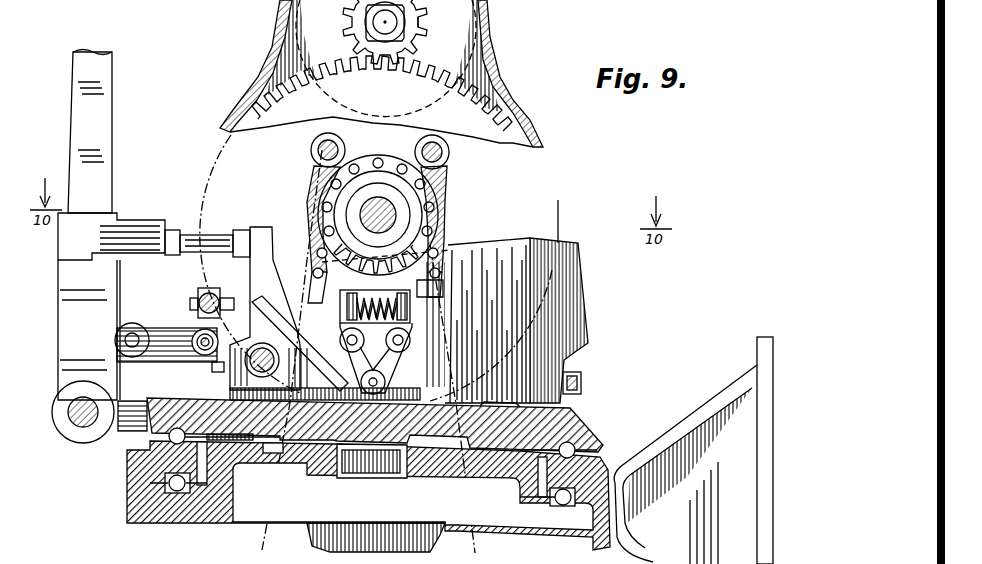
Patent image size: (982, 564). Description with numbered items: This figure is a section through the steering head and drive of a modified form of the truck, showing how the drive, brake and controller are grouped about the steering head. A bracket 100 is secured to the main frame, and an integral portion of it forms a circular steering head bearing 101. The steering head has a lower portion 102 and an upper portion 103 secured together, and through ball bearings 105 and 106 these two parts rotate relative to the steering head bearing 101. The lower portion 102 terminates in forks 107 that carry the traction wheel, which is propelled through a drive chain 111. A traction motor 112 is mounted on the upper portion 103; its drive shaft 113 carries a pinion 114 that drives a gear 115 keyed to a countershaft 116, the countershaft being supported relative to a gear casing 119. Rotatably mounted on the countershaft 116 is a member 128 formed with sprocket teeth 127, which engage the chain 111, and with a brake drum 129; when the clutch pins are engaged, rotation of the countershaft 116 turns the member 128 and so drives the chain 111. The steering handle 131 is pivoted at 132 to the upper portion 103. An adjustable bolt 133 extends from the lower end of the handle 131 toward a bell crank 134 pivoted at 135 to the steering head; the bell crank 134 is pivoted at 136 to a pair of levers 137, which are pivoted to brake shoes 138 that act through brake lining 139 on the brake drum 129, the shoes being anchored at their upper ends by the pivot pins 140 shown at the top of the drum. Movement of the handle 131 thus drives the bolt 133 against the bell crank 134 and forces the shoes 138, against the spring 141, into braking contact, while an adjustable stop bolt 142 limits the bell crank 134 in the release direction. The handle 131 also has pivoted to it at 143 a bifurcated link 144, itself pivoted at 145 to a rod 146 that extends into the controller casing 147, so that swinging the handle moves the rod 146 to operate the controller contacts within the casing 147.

The bracket 100 is at (697, 414).
The steering head bearing 101 is at (126, 494).
The lower portion of steering head 102 is at (567, 414).
The upper portion of steering head 103 is at (487, 404).
The ball bearing 105 is at (168, 438).
The ball bearing 106 is at (168, 482).
The forks 107 is at (300, 541).
The drive chain 111 is at (432, 278).
The traction motor 112 is at (470, 27).
The drive shaft 113 is at (388, 22).
The pinion 114 is at (418, 32).
The gear 115 is at (422, 58).
The countershaft 116 is at (362, 213).
The gear casing 119 is at (506, 80).
The sprocket teeth 127 is at (430, 243).
The member 128 is at (352, 205).
The brake drum 129 is at (441, 168).
The steering handle 131 is at (113, 106).
The pivot 132 is at (60, 430).
The adjustable bolt 133 is at (212, 232).
The bell crank 134 is at (282, 277).
The pivot 135 is at (268, 310).
The pivot 136 is at (386, 384).
The levers 137 is at (388, 356).
The brake shoes 138 is at (308, 176).
The brake lining 139 is at (441, 186).
The bolt eye 140 is at (311, 150).
The spring 141 is at (400, 308).
The adjustable stop bolt 142 is at (207, 293).
The pivot 143 is at (134, 333).
The bifurcated link 144 is at (168, 321).
The pivot 145 is at (197, 348).
The rod 146 is at (214, 367).
The controller casing 147 is at (592, 286).